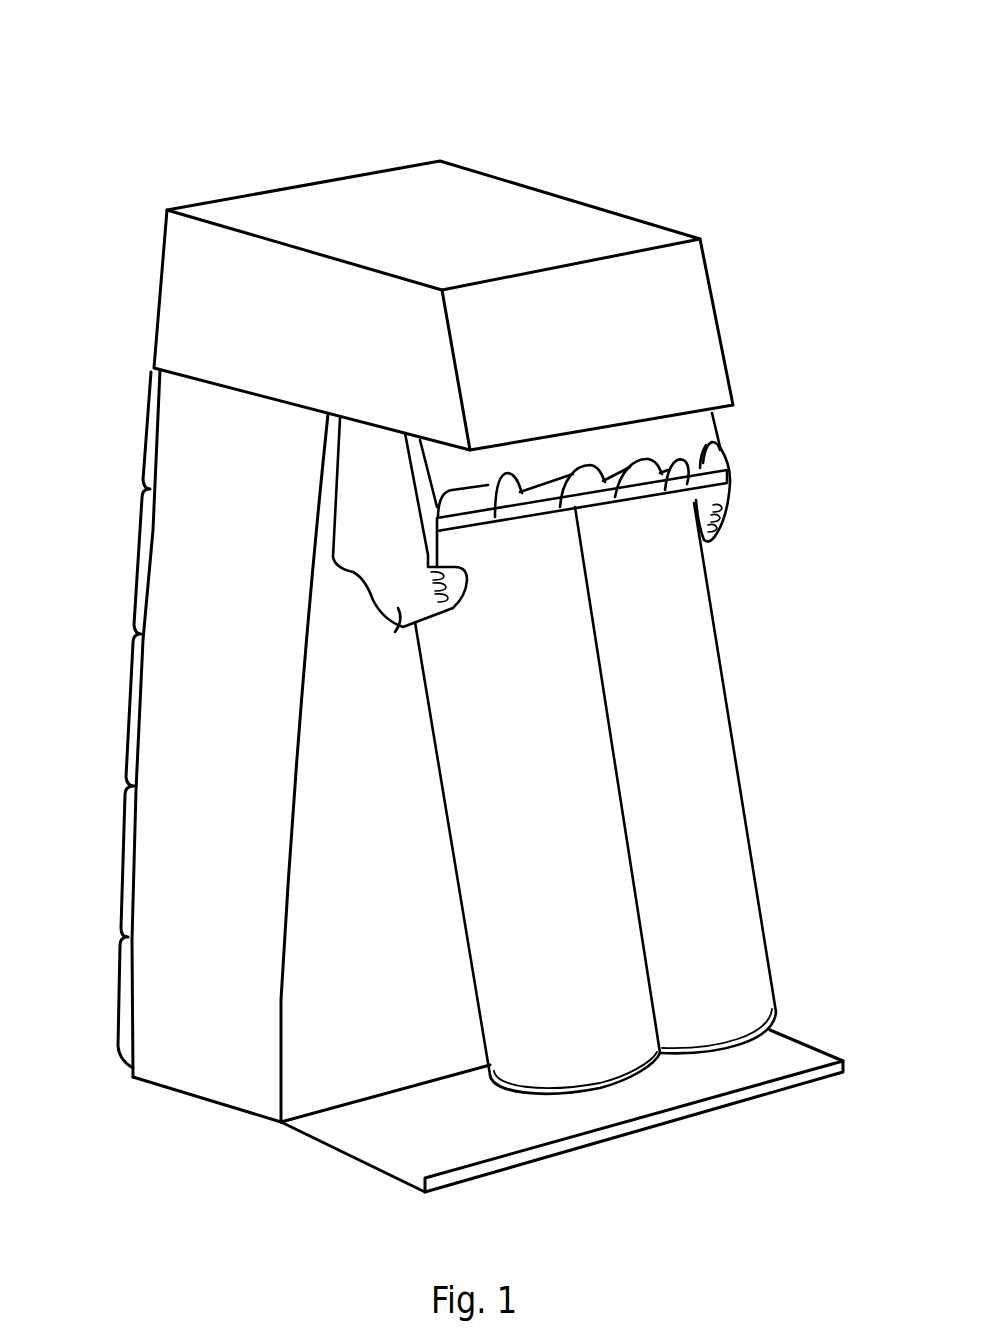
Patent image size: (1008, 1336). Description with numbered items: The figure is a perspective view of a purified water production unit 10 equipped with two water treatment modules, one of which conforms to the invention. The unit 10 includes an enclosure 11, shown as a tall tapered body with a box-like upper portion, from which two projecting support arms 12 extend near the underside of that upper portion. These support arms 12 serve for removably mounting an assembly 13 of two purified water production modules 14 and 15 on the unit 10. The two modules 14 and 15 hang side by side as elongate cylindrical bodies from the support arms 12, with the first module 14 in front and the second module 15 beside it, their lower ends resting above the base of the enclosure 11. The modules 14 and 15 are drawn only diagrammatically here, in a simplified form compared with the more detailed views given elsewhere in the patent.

The purified water production unit 10 is at (587, 103).
The enclosure 11 is at (205, 545).
The projecting support arms 12 is at (402, 623).
The assembly 13 is at (607, 776).
The purified water production module 14 is at (478, 1000).
The purified water production module 15 is at (748, 846).